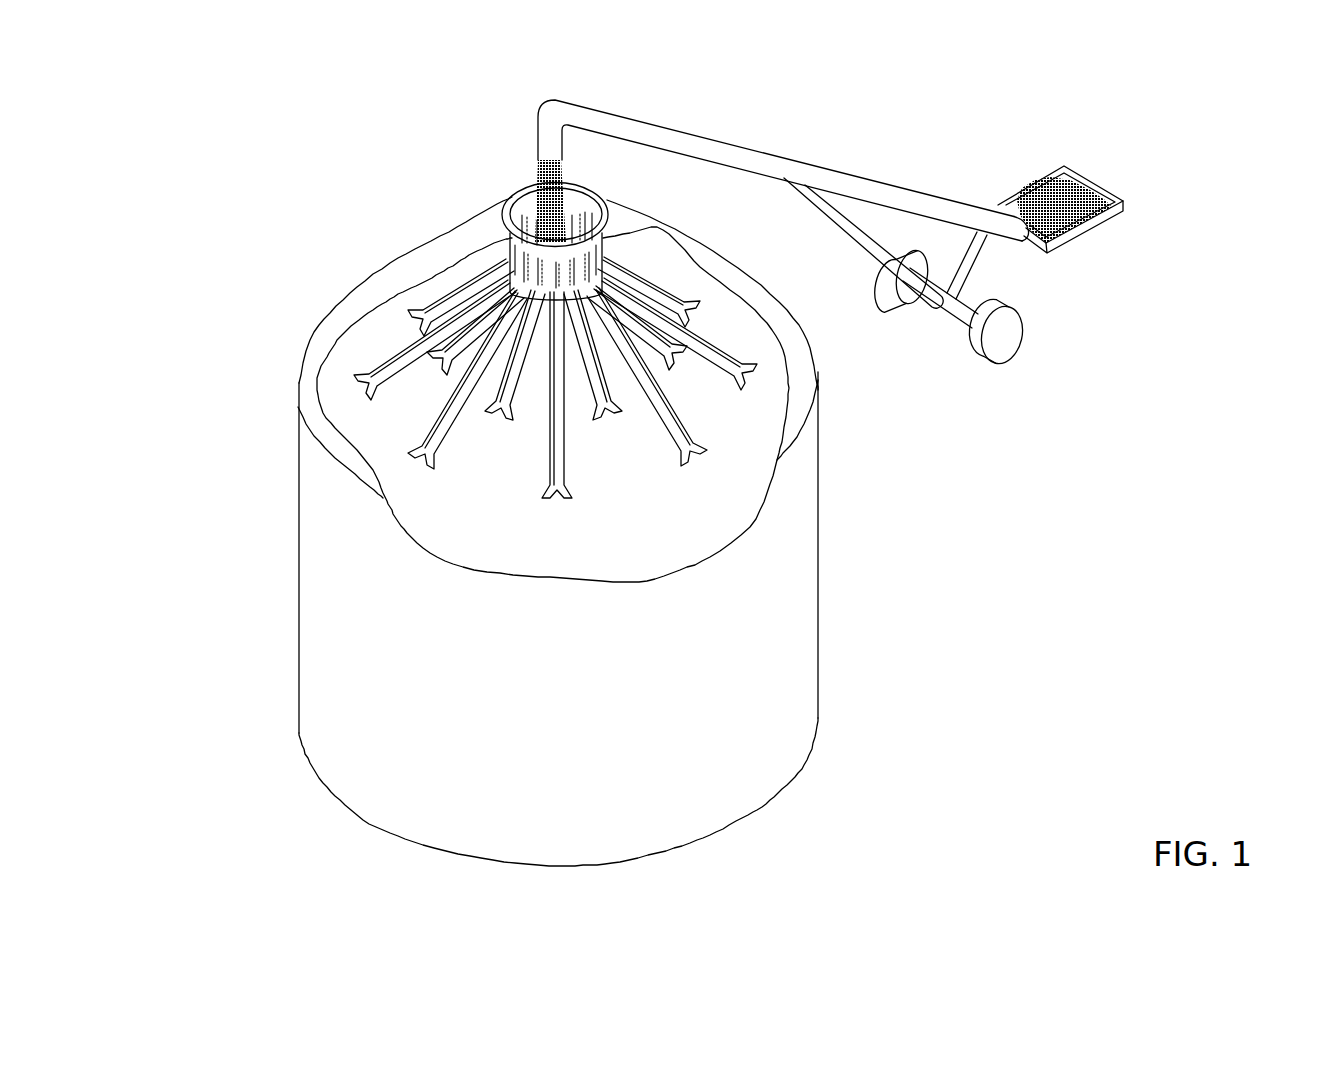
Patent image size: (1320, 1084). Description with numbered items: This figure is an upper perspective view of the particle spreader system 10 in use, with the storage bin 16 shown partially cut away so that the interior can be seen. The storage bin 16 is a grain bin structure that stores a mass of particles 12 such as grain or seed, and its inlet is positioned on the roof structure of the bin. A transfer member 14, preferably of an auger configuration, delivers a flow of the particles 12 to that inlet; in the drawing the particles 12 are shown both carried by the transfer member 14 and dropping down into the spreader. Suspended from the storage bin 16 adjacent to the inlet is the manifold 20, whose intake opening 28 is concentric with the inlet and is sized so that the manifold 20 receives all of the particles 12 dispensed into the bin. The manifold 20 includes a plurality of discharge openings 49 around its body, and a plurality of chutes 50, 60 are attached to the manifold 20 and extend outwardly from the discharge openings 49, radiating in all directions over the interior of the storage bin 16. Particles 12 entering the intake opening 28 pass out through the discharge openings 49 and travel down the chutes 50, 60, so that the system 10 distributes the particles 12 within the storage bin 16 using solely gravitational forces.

The particle spreader system 10 is at (240, 158).
The mass of particles 12 is at (533, 175).
The transfer member 14 is at (824, 180).
The storage bin 16 is at (805, 573).
The manifold 20 is at (561, 232).
The intake opening 28 is at (587, 207).
The discharge openings 49 is at (600, 290).
The chutes 50 is at (394, 353).
The chutes 60 is at (440, 297).